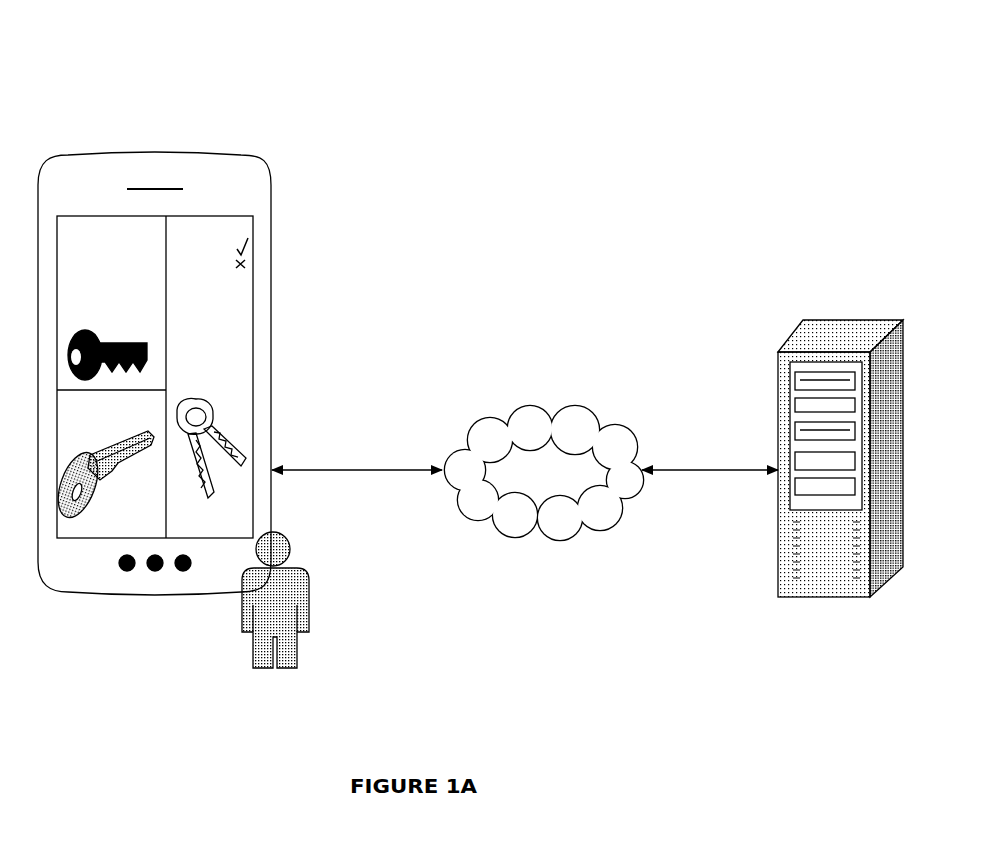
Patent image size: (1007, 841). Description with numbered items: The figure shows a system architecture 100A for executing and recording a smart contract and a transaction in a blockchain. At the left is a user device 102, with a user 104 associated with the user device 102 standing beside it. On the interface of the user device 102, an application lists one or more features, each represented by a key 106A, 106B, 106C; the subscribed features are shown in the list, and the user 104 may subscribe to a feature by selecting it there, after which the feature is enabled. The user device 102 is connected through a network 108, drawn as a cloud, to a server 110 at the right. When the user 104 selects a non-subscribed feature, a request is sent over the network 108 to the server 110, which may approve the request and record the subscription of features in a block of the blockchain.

The system architecture 100A is at (630, 273).
The user device 102 is at (150, 305).
The user 104 is at (296, 568).
The key 106A is at (82, 326).
The key 106B is at (88, 452).
The key 106C is at (194, 402).
The network 108 is at (576, 406).
The server 110 is at (852, 330).